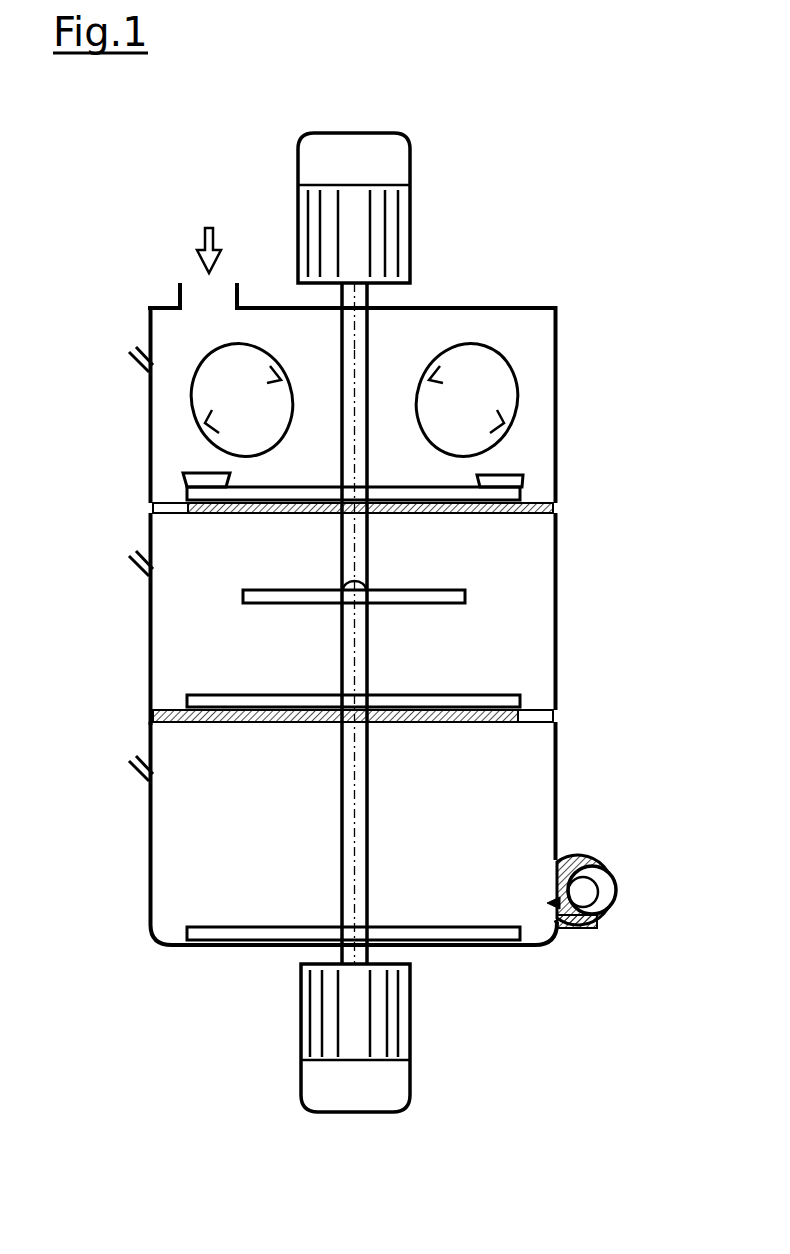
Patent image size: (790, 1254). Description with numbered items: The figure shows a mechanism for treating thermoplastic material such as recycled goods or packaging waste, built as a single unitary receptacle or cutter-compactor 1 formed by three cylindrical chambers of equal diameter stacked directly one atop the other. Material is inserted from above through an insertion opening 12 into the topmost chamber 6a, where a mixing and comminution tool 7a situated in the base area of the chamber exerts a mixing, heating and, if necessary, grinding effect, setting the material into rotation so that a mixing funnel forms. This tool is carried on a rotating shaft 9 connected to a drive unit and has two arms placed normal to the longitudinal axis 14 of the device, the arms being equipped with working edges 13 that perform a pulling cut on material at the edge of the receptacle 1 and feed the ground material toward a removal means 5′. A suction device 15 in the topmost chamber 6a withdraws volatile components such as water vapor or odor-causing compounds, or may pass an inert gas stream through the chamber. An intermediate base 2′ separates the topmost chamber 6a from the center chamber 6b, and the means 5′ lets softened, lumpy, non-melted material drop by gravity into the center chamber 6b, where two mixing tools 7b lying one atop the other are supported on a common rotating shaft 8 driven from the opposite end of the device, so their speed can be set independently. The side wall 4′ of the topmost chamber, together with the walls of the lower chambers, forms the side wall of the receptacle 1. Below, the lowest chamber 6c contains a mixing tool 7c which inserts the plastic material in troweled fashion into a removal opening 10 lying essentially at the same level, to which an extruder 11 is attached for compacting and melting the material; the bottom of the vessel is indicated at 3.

The receptacle or cutter-compactor 1 is at (416, 588).
The intermediate base 2′ is at (450, 516).
The vessel bottom 3 is at (226, 947).
The side wall 4′ is at (560, 410).
The means (removal opening) 5′ is at (173, 508).
The topmost chamber 6a is at (354, 399).
The center chamber 6b is at (352, 611).
The lowest chamber 6c is at (352, 832).
The mixing and comminution tool 7a is at (397, 488).
The mixing tools 7b is at (398, 600).
The mixing tool 7c is at (397, 926).
The rotating shaft 8 is at (366, 833).
The rotating shaft 9 is at (364, 400).
The removal opening 10 is at (566, 905).
The extruder 11 is at (618, 912).
The insertion opening 12 is at (176, 288).
The working edges 13 is at (512, 480).
The longitudinal axis 14 is at (356, 340).
The suction device 15 is at (130, 352).